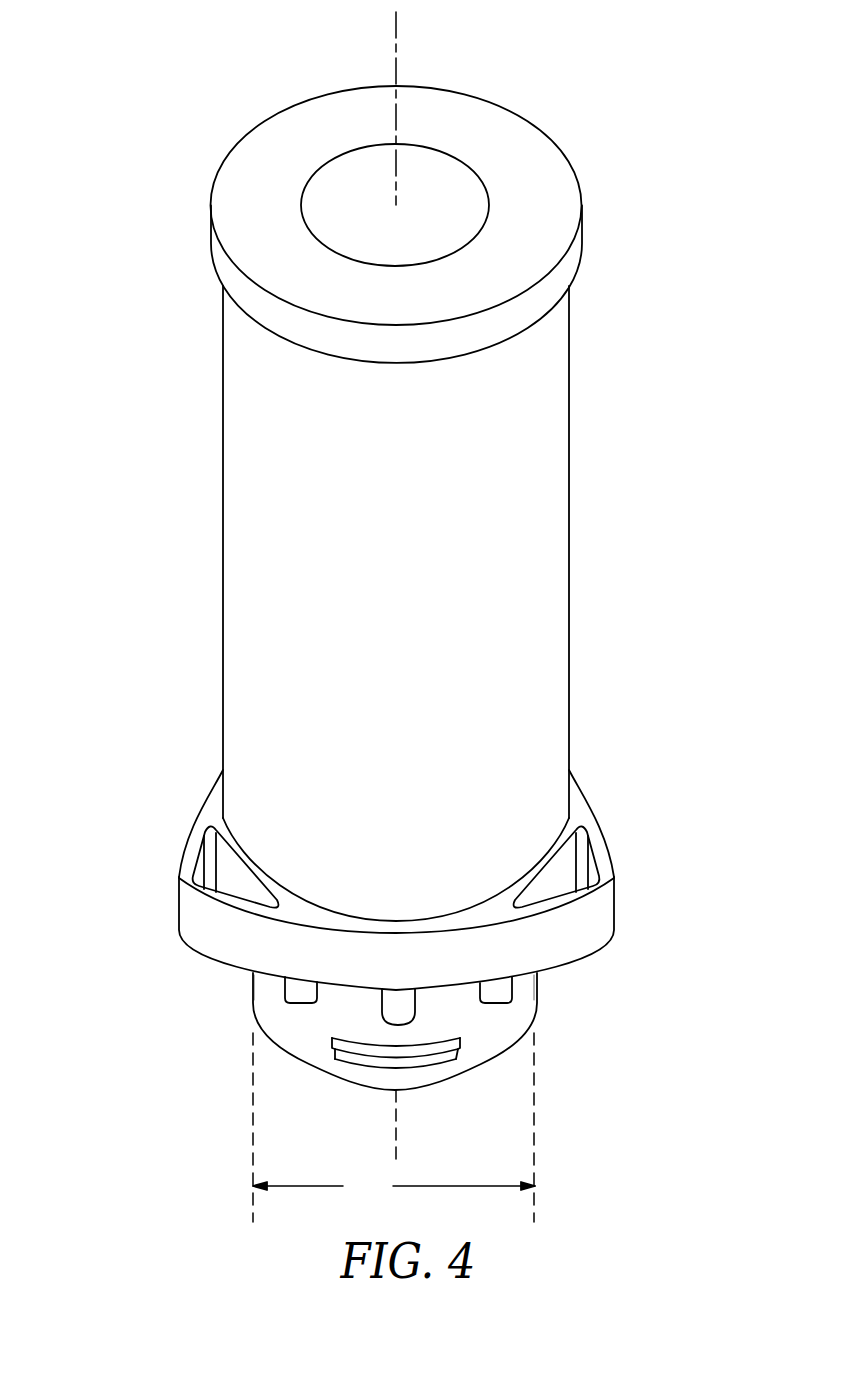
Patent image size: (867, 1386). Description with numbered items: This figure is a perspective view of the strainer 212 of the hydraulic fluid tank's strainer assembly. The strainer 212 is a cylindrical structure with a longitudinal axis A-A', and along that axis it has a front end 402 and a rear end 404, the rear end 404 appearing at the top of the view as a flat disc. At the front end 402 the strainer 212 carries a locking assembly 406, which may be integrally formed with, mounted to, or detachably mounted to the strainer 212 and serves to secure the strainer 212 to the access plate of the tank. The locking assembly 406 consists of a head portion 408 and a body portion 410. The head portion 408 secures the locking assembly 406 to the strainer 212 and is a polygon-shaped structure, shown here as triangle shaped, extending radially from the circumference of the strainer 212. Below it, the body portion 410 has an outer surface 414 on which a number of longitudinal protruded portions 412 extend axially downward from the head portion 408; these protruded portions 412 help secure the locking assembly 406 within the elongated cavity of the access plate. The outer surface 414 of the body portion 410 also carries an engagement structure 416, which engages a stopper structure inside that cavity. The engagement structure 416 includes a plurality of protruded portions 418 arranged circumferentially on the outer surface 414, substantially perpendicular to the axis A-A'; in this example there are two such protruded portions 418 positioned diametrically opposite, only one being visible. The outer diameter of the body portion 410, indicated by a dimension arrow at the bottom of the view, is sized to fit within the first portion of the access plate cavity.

The front end 402 is at (401, 611).
The rear end 404 is at (598, 241).
The strainer 212 is at (569, 523).
The head portion 408 is at (195, 922).
The body portion 410 is at (533, 990).
The longitudinal protruded portions 412 is at (296, 992).
The locking assembly 406 is at (407, 1056).
The outer surface 414 is at (300, 1032).
The engagement structure 416 is at (364, 1077).
The protruded portions 418 is at (435, 1060).